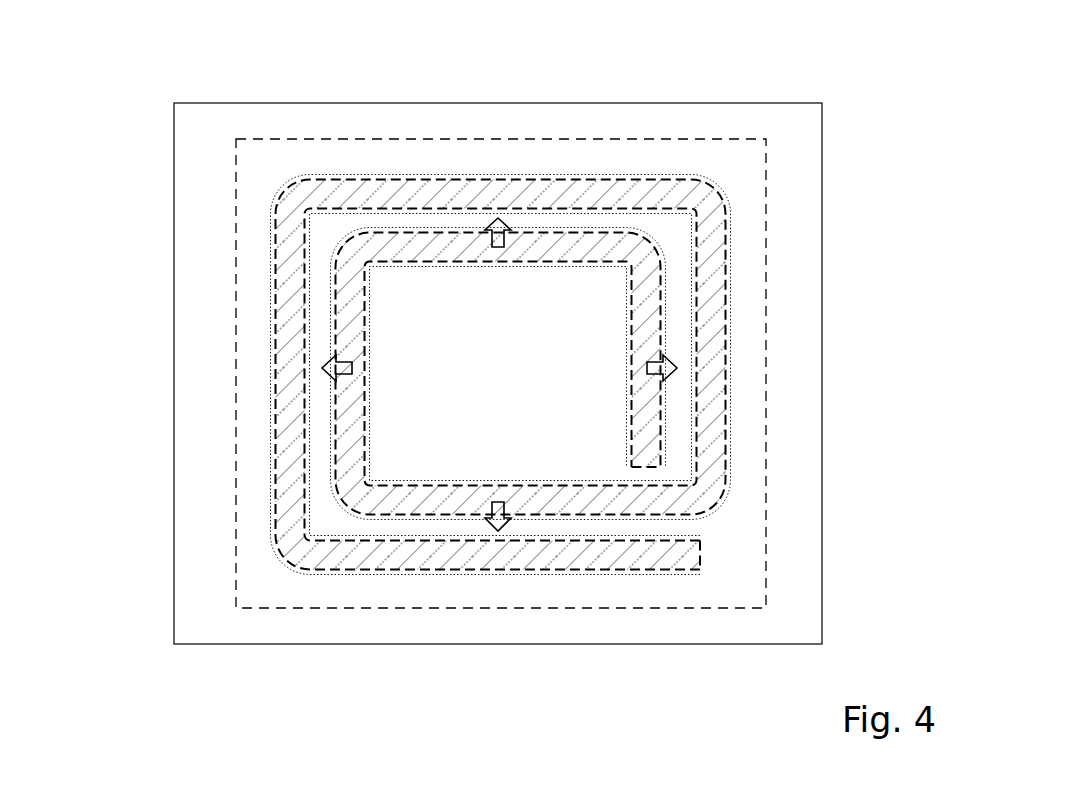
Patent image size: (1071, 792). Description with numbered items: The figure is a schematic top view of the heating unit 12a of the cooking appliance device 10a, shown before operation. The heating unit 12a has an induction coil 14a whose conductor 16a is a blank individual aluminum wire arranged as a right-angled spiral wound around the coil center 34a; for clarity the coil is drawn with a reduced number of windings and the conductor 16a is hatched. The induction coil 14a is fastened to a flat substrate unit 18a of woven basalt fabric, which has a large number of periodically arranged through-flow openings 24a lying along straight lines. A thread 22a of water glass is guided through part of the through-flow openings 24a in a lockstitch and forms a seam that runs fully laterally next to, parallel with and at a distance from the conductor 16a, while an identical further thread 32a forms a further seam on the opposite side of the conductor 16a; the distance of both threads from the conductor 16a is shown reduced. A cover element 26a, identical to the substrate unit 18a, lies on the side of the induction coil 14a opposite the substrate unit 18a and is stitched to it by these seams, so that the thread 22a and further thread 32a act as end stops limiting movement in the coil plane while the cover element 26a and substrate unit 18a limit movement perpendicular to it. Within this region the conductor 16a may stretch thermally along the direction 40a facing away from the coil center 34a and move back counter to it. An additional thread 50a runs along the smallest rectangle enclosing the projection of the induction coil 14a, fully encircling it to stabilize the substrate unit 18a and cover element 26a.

The cooking appliance device 10a is at (136, 186).
The heating unit 12a is at (136, 236).
The induction coil 14a is at (723, 179).
The conductor 16a is at (688, 172).
The substrate unit 18a is at (174, 533).
The cover element 26a is at (498, 373).
The thread 22a is at (341, 172).
The through-flow openings 24a is at (390, 168).
The further thread 32a is at (466, 205).
The coil center 34a is at (503, 370).
The direction 40a is at (500, 217).
The additional thread 50a is at (766, 187).